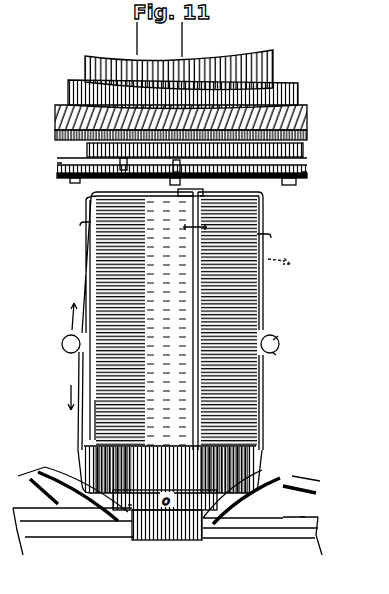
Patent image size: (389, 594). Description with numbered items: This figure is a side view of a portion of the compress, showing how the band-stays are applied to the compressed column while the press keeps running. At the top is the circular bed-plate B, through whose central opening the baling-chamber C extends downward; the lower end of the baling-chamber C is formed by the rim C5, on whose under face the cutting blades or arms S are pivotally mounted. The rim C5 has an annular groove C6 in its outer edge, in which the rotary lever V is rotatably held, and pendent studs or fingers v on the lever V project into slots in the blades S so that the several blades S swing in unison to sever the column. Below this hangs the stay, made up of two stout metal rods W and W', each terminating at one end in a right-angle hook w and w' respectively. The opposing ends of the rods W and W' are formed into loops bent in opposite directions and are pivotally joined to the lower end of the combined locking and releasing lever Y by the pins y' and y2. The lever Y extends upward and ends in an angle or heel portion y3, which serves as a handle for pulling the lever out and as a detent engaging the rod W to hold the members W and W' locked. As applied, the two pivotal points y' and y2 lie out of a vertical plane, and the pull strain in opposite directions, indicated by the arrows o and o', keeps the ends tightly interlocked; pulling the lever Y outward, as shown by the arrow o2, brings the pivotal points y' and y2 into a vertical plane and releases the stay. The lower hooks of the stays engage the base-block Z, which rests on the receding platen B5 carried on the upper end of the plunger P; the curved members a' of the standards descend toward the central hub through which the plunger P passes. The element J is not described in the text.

The baling-chamber C is at (179, 70).
The bed-plate B is at (181, 117).
The rotary lever V is at (287, 152).
The rim C5 is at (75, 152).
The annular groove C6 is at (303, 167).
The pendent studs or fingers v is at (310, 172).
The cutting blades or arms S is at (275, 180).
The right-angle hook w is at (176, 187).
The angle or heel portion y3 is at (266, 235).
The stay rod W is at (175, 320).
The arrow indicating pull strain o is at (67, 309).
The arrow indicating lever pull direction o2 is at (282, 254).
The combined locking and releasing lever Y is at (190, 307).
The pin y' is at (285, 333).
The pin y2 is at (273, 354).
The stay rod W' is at (166, 421).
The arrow indicating pull strain o' is at (61, 407).
The base-block Z is at (170, 469).
The downwardly and inwardly curved members a' is at (169, 486).
The right-angle hook w' is at (170, 519).
The receding platen B5 is at (128, 505).
The plunger P is at (190, 525).
The bracket J is at (300, 517).